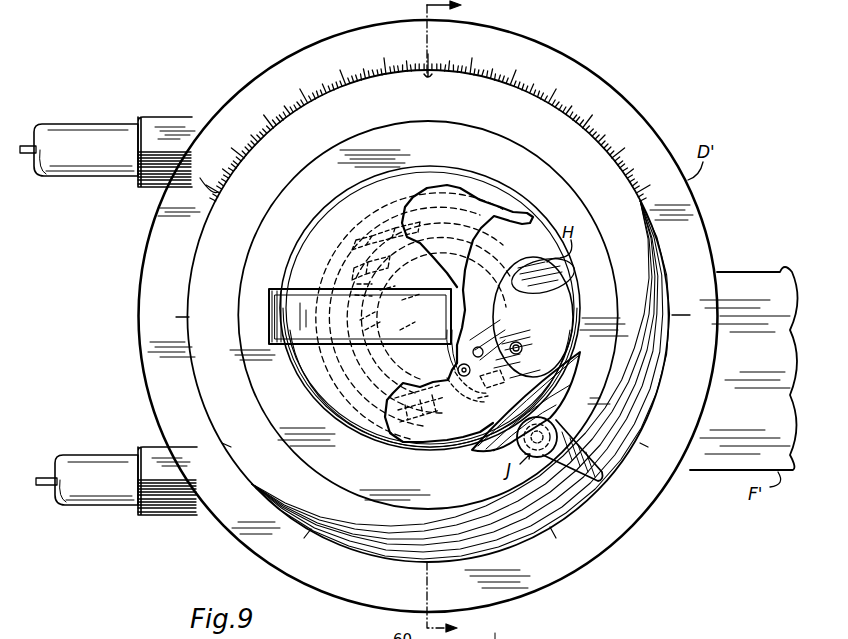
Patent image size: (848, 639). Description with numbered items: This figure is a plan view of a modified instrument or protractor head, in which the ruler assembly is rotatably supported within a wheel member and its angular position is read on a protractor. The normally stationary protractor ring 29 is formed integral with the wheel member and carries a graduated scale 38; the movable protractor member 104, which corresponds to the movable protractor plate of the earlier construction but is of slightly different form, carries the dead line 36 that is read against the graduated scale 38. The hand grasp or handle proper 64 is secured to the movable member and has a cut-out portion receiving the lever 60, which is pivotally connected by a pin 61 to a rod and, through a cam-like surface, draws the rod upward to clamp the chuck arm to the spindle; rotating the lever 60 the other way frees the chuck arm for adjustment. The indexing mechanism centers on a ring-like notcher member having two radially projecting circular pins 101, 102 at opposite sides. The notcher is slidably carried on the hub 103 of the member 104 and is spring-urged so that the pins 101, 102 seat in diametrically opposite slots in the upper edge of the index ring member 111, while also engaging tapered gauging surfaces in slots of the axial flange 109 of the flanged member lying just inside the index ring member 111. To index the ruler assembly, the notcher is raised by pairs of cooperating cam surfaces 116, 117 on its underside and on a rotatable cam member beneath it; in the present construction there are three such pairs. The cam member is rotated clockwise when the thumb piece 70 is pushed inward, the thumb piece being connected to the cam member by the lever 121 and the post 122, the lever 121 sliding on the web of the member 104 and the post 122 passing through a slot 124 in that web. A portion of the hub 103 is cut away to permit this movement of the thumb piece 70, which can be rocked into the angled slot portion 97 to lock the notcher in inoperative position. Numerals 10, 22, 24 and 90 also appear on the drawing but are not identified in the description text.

The sight line arrow 10 is at (454, 319).
The upper adjusting knob 22 is at (136, 172).
The lower adjusting knob 24 is at (50, 480).
The stationary protractor ring 29 is at (655, 500).
The dead line 36 is at (426, 76).
The graduated scale 38 is at (216, 196).
The lever 60 is at (272, 316).
The pin 61 is at (496, 635).
The handle proper 64 is at (332, 234).
The thumb piece 70 is at (580, 281).
The ninety degree scale mark 90 is at (431, 317).
The slot portion 97 is at (546, 260).
The pin 101 is at (390, 430).
The pin 102 is at (433, 213).
The hub 103 is at (470, 236).
The movable protractor member 104 is at (262, 469).
The axial flange 109 is at (352, 364).
The index ring member 111 is at (378, 403).
The cam surface 116 is at (353, 268).
The cam surface 117 is at (354, 243).
The lever 121 is at (490, 392).
The post 122 is at (476, 396).
The slot 124 is at (431, 384).